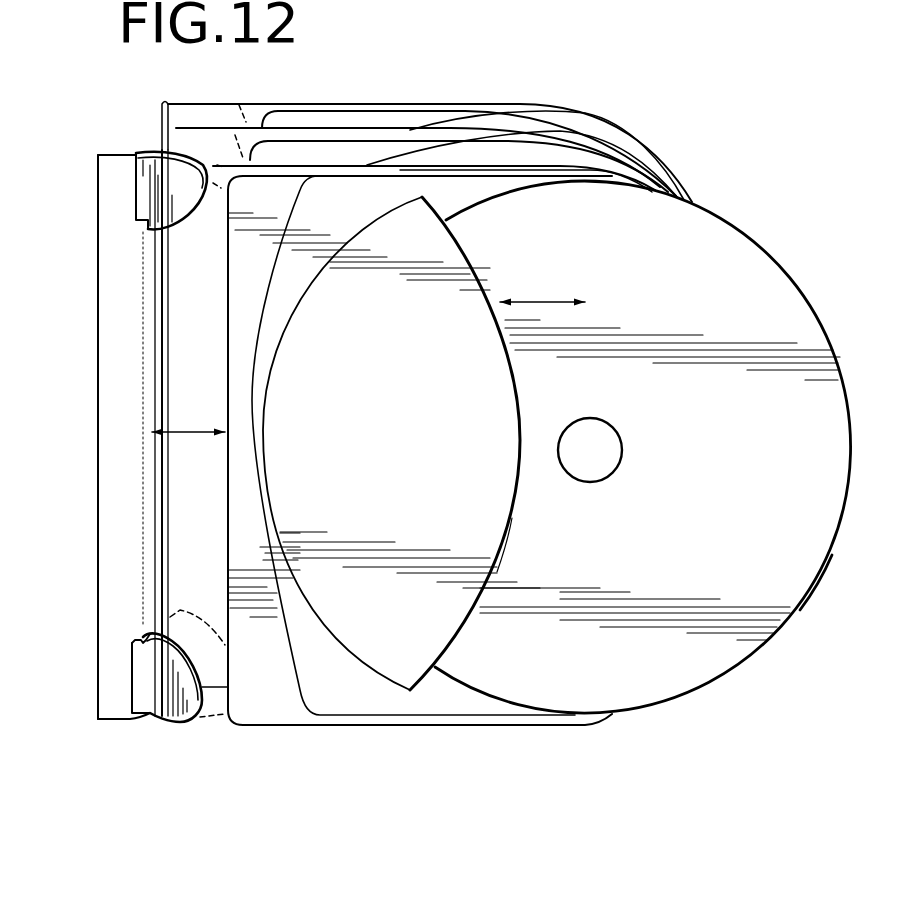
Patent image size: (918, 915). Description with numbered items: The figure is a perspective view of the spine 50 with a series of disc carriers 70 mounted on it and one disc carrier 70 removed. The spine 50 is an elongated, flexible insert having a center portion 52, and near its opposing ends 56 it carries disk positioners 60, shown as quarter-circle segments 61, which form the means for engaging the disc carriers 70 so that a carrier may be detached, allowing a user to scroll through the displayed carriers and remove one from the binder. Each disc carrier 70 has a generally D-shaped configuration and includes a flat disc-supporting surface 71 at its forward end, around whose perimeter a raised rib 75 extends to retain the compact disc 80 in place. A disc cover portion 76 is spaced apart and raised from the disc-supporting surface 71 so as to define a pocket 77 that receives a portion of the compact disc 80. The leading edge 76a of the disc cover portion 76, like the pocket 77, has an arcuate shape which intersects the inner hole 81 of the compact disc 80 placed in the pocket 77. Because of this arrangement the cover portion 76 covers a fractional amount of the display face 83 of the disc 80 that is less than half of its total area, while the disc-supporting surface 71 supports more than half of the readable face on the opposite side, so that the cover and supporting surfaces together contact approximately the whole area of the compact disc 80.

The spine 50 is at (97, 343).
The center portion 52 is at (110, 432).
The opposing ends 56 is at (98, 162).
The disk positioner 60 is at (165, 185).
The quarter-circle segment 61 is at (160, 700).
The disc carrier 70 is at (455, 744).
The disc-supporting surface 71 is at (452, 188).
The raised rib 75 is at (577, 728).
The disc cover portion 76 is at (403, 468).
The leading edge 76a is at (497, 570).
The pocket 77 is at (478, 253).
The compact disc 80 is at (790, 393).
The inner hole 81 is at (615, 474).
The display face 83 is at (816, 577).